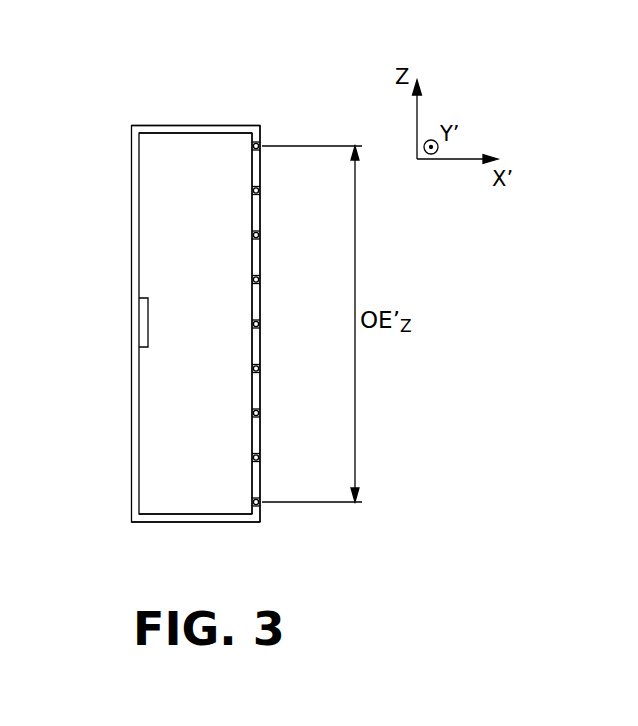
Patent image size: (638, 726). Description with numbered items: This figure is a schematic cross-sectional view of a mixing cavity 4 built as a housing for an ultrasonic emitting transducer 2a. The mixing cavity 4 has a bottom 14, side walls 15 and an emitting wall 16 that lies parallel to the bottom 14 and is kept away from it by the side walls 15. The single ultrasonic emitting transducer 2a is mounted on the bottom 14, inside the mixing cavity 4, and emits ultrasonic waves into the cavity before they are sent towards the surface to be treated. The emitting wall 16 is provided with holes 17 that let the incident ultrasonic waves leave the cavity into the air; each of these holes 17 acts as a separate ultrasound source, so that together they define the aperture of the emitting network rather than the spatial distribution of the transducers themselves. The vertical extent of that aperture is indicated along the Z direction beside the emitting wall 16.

The mixing cavity 4 is at (236, 114).
The bottom 14 is at (137, 213).
The side walls 15 is at (174, 130).
The emitting wall 16 is at (257, 212).
The holes 17 is at (258, 328).
The ultrasonic emitting transducer 2a is at (141, 322).